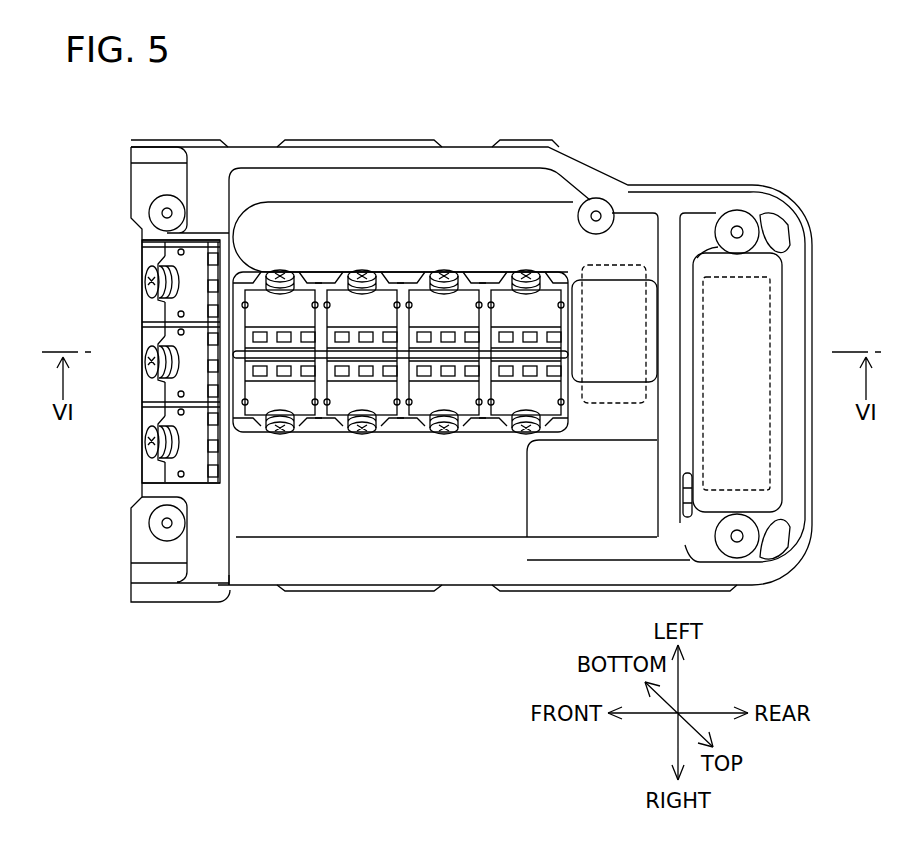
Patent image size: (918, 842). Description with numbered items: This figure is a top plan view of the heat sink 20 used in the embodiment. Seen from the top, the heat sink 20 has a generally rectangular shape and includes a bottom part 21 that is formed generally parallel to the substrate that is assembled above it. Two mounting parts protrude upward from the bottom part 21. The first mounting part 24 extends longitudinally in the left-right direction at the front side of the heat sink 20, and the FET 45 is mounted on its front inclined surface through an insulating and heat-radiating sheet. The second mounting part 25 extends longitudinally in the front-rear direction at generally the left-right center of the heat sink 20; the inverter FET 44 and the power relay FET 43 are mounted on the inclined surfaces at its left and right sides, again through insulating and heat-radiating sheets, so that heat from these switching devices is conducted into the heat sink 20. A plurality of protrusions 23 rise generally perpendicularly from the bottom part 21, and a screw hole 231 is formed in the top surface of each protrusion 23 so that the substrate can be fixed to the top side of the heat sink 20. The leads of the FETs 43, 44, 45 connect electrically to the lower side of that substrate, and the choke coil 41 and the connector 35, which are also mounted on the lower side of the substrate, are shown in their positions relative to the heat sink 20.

The heat sink 20 is at (256, 142).
The bottom part 21 is at (363, 232).
The protrusion 23 is at (155, 210).
The screw hole 231 is at (166, 208).
The first mounting part 24 is at (168, 402).
The second mounting part 25 is at (397, 303).
The connector 35 is at (775, 488).
The choke coil 41 is at (643, 265).
The power relay FET 43 is at (503, 300).
The inverter FET 44 is at (302, 300).
The FET 45 is at (175, 266).